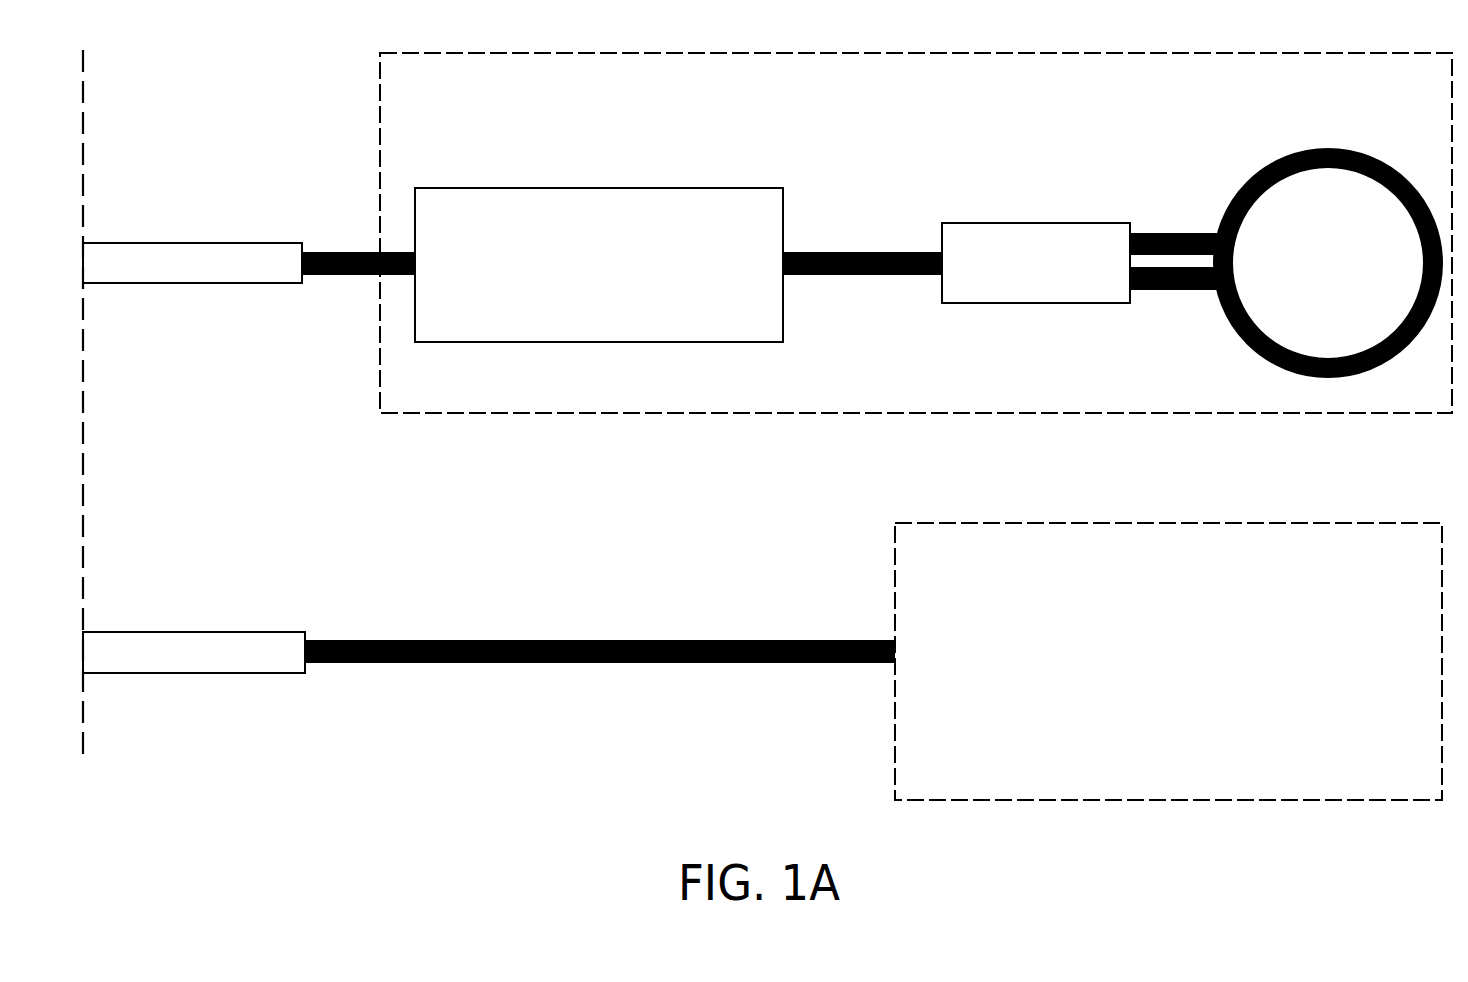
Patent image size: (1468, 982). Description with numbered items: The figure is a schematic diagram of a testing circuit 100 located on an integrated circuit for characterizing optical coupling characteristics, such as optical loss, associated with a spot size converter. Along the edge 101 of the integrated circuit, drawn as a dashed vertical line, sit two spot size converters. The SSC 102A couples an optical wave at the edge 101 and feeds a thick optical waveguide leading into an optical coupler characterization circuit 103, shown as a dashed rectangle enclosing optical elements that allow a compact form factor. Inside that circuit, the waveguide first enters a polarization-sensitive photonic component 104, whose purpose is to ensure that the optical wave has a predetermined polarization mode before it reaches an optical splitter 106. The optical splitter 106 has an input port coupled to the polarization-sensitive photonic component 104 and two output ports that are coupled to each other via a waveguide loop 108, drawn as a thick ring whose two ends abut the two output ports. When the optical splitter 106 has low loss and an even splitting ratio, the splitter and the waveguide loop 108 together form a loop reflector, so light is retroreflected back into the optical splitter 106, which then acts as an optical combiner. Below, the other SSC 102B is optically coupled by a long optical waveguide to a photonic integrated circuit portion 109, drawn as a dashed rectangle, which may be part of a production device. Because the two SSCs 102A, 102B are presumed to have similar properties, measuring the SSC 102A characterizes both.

The testing circuit 100 is at (288, 72).
The edge 101 is at (83, 430).
The SSC 102A is at (250, 277).
The SSC 102B is at (250, 666).
The optical coupler characterization circuit 103 is at (475, 92).
The polarization-sensitive photonic component 104 is at (618, 321).
The optical splitter 106 is at (1055, 276).
The waveguide loop 108 is at (1263, 165).
The photonic integrated circuit portion 109 is at (1187, 676).